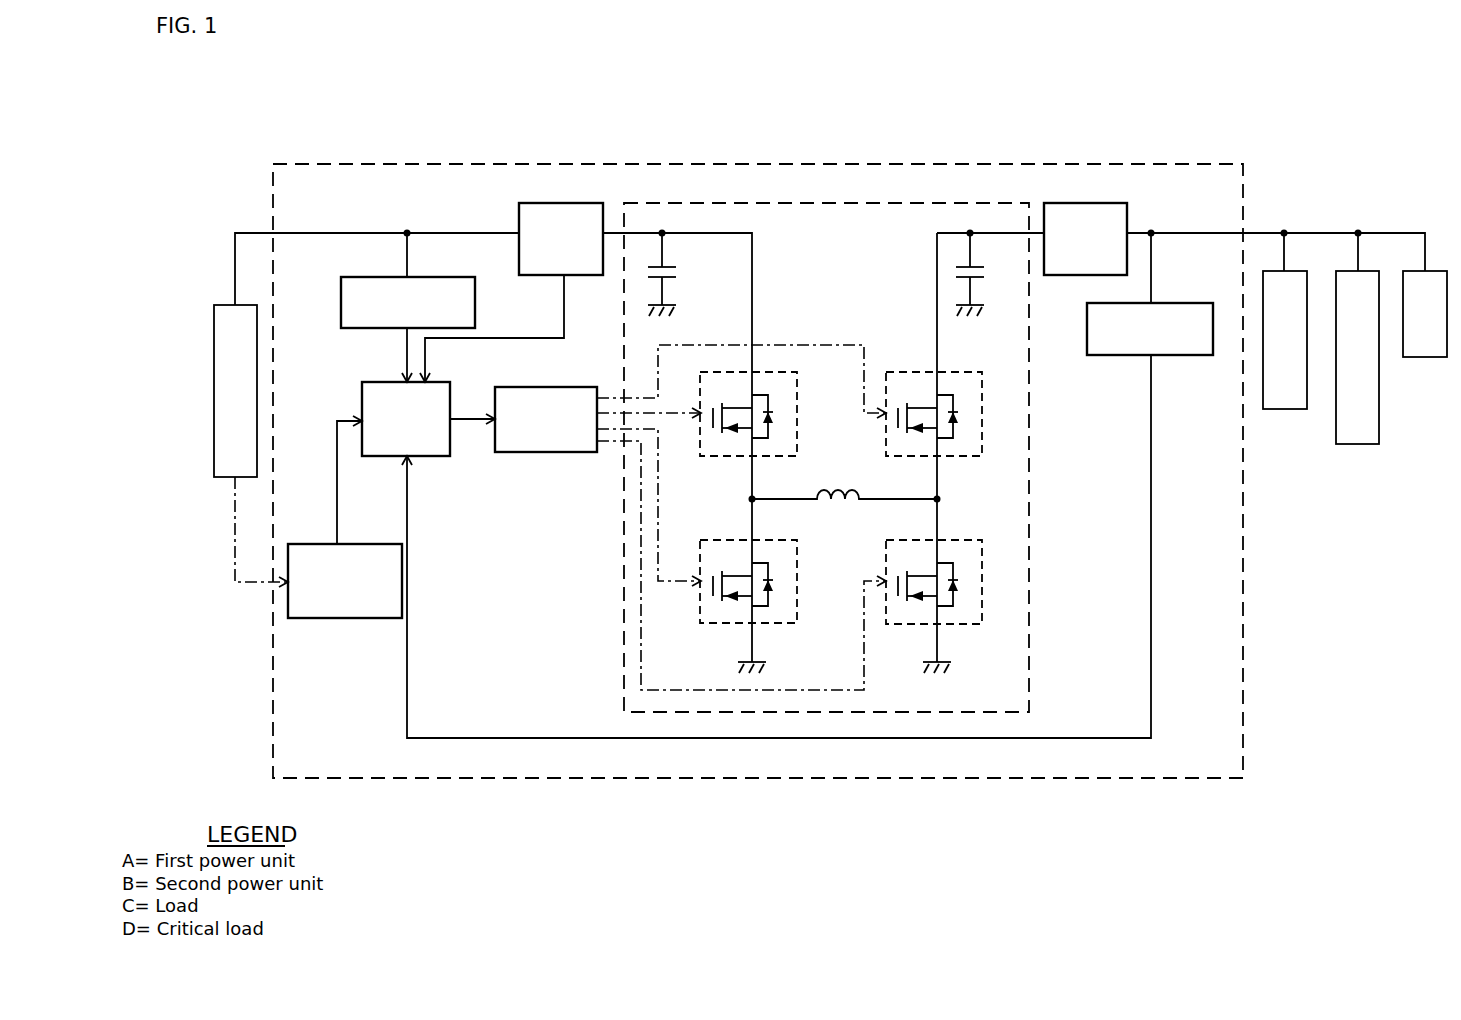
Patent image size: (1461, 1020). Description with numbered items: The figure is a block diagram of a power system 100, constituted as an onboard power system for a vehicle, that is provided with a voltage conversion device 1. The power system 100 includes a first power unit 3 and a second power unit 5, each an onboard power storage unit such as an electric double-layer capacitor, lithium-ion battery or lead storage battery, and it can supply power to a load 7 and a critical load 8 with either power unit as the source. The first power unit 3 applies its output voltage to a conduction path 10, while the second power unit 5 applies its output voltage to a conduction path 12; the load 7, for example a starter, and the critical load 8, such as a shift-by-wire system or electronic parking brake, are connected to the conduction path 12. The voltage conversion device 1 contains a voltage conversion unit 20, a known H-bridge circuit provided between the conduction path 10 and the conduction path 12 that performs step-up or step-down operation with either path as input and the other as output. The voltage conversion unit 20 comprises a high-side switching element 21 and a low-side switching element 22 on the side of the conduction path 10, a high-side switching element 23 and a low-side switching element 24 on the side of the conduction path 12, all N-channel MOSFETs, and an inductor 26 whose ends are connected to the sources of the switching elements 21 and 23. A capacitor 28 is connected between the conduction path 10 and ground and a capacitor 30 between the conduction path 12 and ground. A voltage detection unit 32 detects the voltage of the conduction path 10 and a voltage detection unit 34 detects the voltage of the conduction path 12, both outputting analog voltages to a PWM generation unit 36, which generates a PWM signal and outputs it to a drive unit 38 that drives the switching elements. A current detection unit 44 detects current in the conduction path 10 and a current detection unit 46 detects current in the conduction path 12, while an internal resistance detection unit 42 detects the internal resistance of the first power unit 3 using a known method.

The power system 100 is at (1286, 108).
The voltage conversion device 1 is at (1133, 163).
The first power unit 3 is at (228, 304).
The second power unit 5 is at (1357, 445).
The load 7 is at (1425, 358).
The critical load 8 is at (1287, 410).
The conduction path 10 is at (323, 232).
The conduction path 12 is at (1180, 233).
The voltage conversion unit 20 is at (978, 203).
The switching element 21 is at (797, 402).
The switching element 22 is at (797, 550).
The switching element 23 is at (953, 372).
The switching element 24 is at (953, 540).
The inductor 26 is at (832, 490).
The capacitor 28 is at (668, 270).
The capacitor 30 is at (975, 268).
The voltage detection unit 32 is at (442, 277).
The voltage detection unit 34 is at (1170, 303).
The PWM generation unit 36 is at (440, 382).
The drive unit 38 is at (560, 386).
The internal resistance detection unit 42 is at (342, 618).
The current detection unit 44 is at (565, 203).
The current detection unit 46 is at (1097, 203).